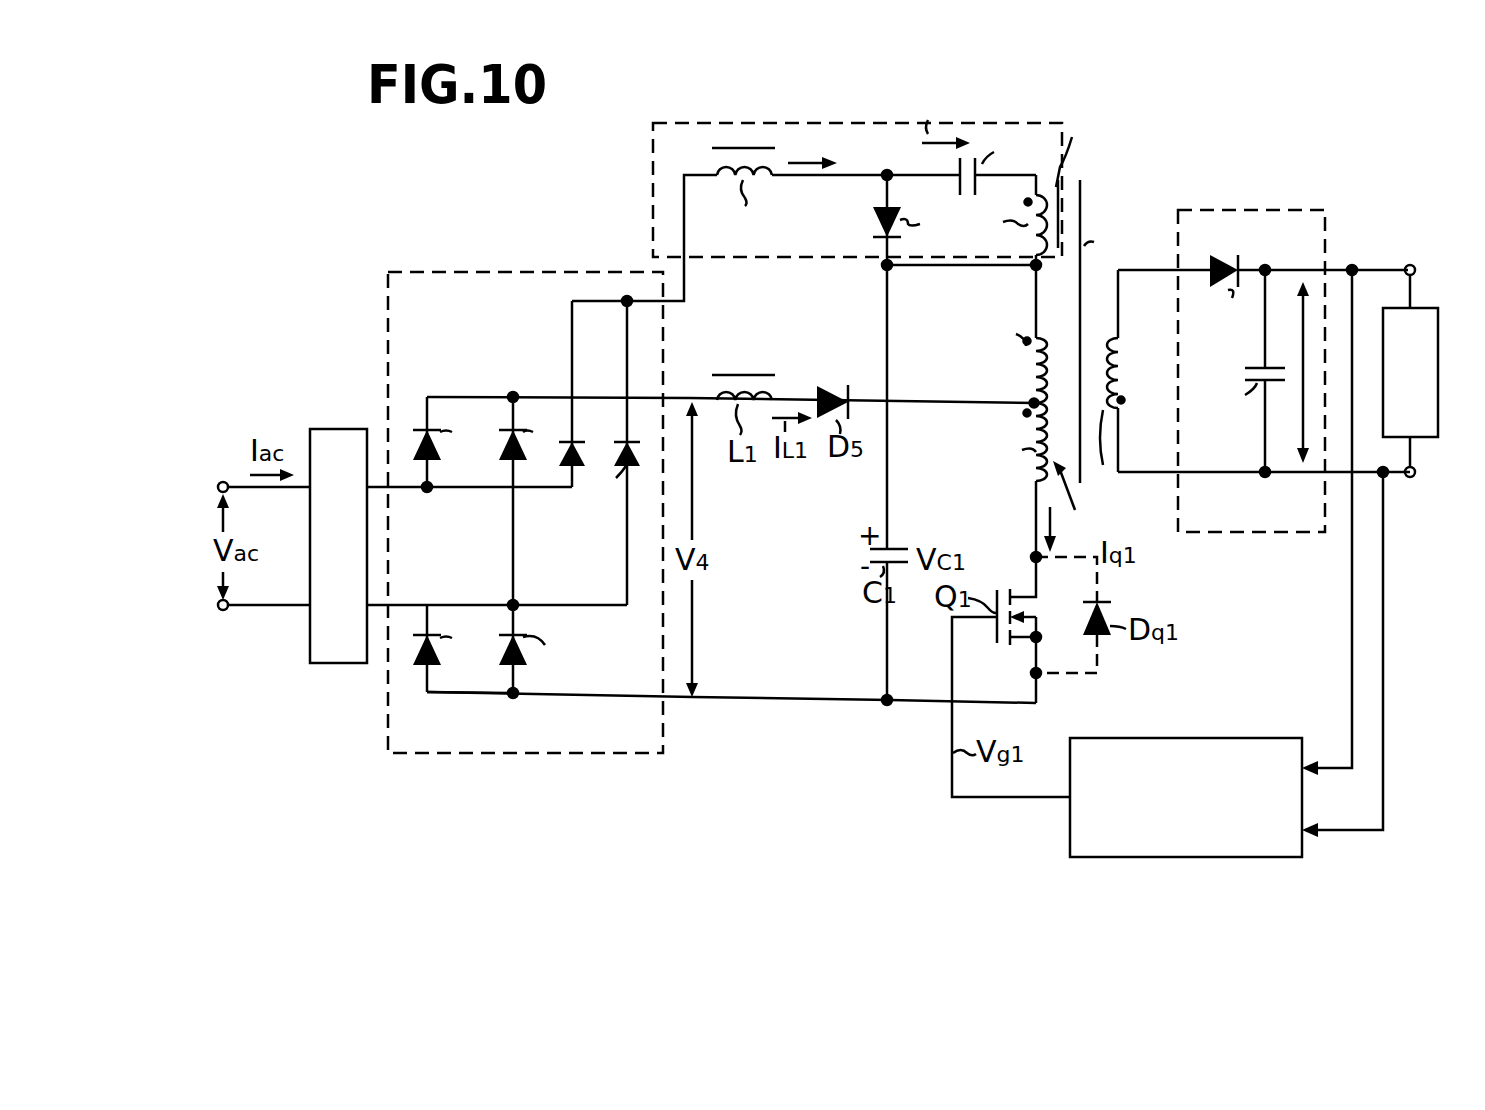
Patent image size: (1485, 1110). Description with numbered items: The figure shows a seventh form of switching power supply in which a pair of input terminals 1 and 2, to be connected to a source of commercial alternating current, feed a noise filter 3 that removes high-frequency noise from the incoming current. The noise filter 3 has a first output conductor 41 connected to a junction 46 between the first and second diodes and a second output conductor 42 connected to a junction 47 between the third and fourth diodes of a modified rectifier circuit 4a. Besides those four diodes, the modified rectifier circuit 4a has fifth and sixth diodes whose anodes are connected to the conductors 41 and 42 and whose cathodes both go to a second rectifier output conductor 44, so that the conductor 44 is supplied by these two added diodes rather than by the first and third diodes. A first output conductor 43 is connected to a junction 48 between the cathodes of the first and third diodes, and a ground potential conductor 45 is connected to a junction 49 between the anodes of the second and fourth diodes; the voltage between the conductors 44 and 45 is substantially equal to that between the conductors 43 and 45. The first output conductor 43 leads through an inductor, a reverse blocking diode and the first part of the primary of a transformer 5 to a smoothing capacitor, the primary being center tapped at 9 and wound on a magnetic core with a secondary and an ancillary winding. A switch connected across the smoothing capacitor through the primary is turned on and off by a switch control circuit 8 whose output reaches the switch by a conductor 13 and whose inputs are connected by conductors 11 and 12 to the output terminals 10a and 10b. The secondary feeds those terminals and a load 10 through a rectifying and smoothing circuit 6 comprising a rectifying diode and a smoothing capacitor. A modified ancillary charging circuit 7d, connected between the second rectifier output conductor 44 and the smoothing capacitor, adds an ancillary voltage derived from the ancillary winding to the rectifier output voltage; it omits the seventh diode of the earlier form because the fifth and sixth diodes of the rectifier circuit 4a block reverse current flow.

The input terminal 1 is at (223, 483).
The input terminal 2 is at (223, 610).
The noise filter 3 is at (333, 429).
The modified rectifier circuit 4a is at (432, 273).
The transformer 5 is at (1086, 191).
The rectifying and smoothing circuit 6 is at (1243, 210).
The modified ancillary charging circuit 7d is at (653, 197).
The switch control circuit 8 is at (1193, 737).
The center tap 9 is at (1032, 403).
The load 10 is at (1408, 308).
The output terminal 10a is at (1409, 265).
The output terminal 10b is at (1410, 478).
The conductor 11 is at (1352, 696).
The conductor 12 is at (1387, 705).
The conductor 13 is at (952, 750).
The first output conductor 41 is at (388, 487).
The second output conductor 42 is at (390, 607).
The first output conductor 43 is at (666, 398).
The second output conductor 44 is at (664, 303).
The third output conductor 45 is at (663, 698).
The junction 46 is at (430, 490).
The junction 47 is at (510, 605).
The junction 48 is at (513, 398).
The junction 49 is at (514, 698).